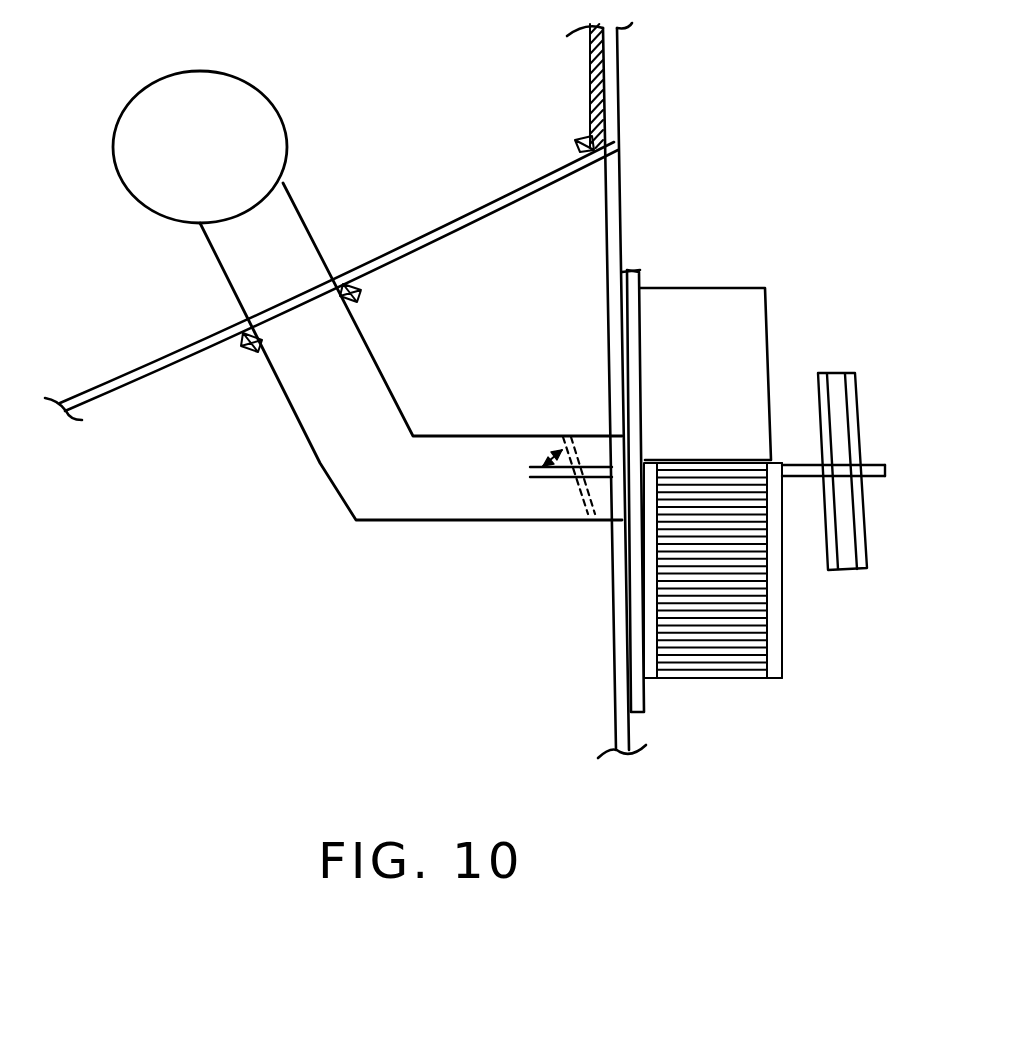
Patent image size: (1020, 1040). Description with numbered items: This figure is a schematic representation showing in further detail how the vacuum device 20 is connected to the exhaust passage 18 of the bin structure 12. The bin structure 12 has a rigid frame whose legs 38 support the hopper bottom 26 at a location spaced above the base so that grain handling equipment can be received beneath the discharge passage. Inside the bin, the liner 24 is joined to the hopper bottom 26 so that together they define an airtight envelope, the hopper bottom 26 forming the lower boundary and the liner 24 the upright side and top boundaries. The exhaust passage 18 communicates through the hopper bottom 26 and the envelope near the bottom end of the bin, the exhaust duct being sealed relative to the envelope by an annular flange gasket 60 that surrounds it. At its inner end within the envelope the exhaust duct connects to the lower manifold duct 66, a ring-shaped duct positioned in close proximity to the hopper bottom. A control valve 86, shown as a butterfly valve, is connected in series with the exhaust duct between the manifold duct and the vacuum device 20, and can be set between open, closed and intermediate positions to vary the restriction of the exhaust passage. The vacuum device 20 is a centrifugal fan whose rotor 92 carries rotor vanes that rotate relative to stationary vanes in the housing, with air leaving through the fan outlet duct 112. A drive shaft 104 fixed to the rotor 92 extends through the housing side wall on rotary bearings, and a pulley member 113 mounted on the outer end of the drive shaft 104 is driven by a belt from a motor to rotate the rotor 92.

The bin structure 12 is at (622, 106).
The exhaust passage 18 is at (320, 467).
The vacuum device 20 is at (721, 318).
The liner 24 is at (593, 94).
The hopper bottom 26 is at (150, 376).
The legs 38 is at (618, 726).
The annular flange gasket 60 is at (362, 292).
The lower manifold duct 66 is at (148, 210).
The control valve 86 is at (562, 470).
The rotor 92 is at (723, 624).
The drive shaft 104 is at (800, 476).
The fan outlet duct 112 is at (768, 634).
The pulley member 113 is at (832, 386).